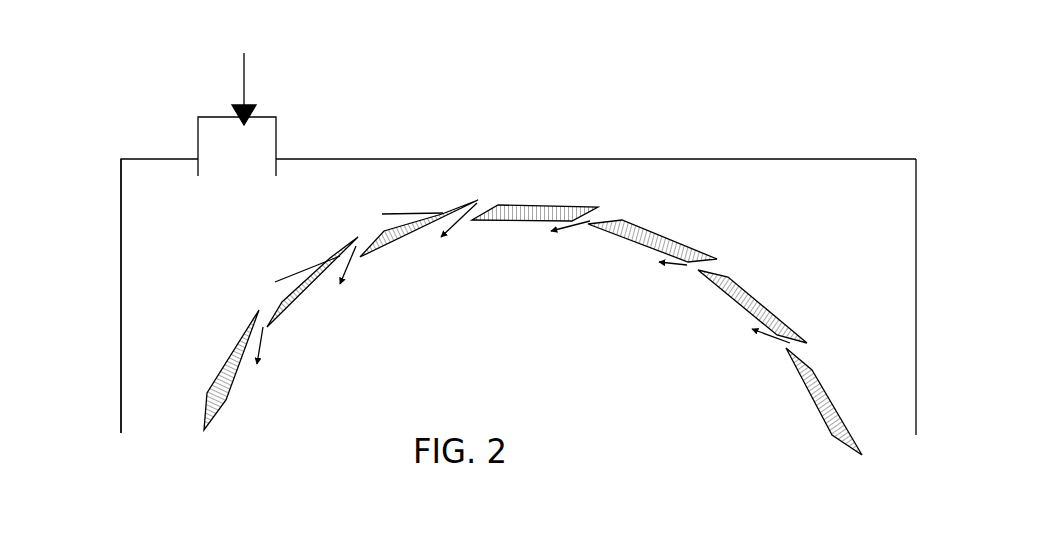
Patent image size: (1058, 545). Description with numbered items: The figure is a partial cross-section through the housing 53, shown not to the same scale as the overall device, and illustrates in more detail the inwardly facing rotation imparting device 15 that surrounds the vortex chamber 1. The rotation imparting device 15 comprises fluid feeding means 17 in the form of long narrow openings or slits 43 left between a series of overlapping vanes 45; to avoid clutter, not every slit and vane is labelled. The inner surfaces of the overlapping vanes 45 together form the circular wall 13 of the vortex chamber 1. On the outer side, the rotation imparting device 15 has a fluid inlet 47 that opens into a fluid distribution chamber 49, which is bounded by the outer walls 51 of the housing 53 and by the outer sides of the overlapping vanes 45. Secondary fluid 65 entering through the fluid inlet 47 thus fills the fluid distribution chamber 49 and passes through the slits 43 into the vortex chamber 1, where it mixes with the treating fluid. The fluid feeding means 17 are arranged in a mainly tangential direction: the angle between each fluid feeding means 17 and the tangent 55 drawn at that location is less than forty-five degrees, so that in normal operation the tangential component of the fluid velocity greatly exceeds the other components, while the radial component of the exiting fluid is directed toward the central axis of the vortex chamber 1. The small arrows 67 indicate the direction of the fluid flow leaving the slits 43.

The vortex chamber 1 is at (528, 378).
The circular wall 13 is at (624, 252).
The rotation imparting device 15 is at (114, 236).
The fluid feeding means 17 is at (266, 312).
The slits 43 is at (483, 210).
The overlapping vanes 45 is at (234, 363).
The fluid inlet 47 is at (277, 135).
The fluid distribution chamber 49 is at (845, 270).
The outer walls 51 is at (121, 220).
The housing 53 is at (838, 152).
The tangent 55 is at (299, 272).
The secondary fluid 65 is at (246, 63).
The flow arrow 67 is at (351, 270).